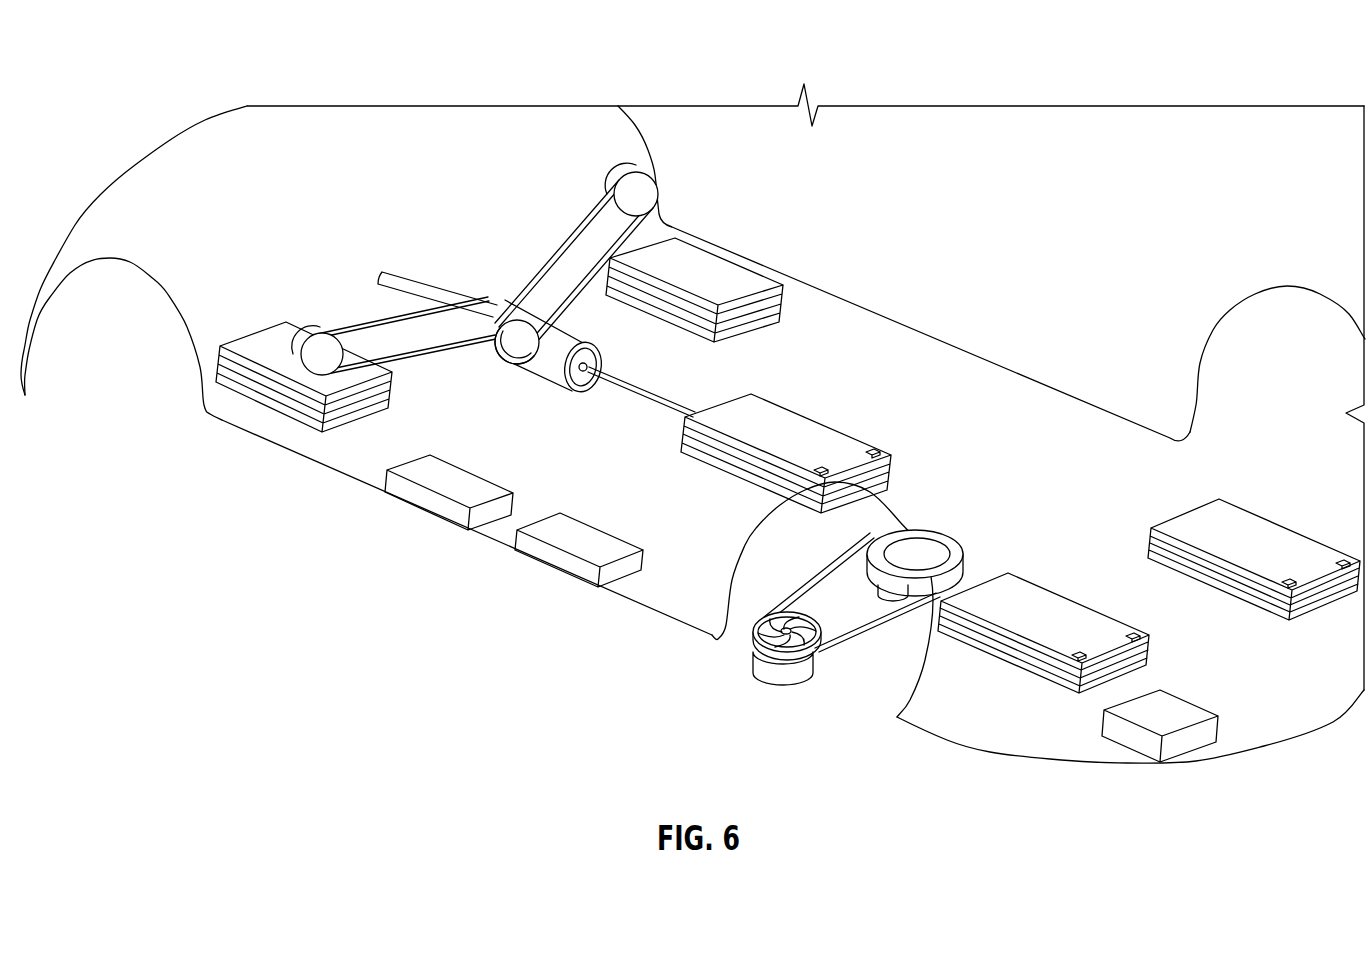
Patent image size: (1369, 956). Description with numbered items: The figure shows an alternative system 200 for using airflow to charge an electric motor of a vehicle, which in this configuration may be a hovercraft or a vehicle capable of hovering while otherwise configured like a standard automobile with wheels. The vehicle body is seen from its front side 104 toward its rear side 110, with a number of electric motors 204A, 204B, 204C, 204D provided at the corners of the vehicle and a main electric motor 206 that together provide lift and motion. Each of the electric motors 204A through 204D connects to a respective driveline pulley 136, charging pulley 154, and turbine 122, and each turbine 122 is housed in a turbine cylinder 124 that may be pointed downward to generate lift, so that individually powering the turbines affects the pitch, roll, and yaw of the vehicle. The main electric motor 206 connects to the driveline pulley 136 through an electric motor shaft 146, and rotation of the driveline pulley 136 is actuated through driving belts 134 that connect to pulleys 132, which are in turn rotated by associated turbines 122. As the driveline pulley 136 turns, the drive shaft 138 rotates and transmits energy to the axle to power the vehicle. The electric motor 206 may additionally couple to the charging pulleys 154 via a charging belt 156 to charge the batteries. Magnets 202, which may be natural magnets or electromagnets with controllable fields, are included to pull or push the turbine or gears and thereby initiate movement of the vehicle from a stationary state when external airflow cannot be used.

The front side 104 is at (1317, 717).
The rear side 110 is at (95, 198).
The turbine 122 is at (788, 613).
The turbine cylinder 124 is at (788, 677).
The pulley 132 is at (290, 356).
The driving belt 134 is at (597, 204).
The driveline pulley 136 is at (503, 297).
The drive shaft 138 is at (385, 276).
The electric motor shaft 146 is at (653, 405).
The charging pulley 154 is at (948, 548).
The charging belt 156 is at (823, 572).
The system 200 is at (735, 63).
The magnet 202 is at (428, 502).
The electric motor 204A is at (268, 338).
The electric motor 204B is at (723, 258).
The electric motor 204C is at (1039, 663).
The electric motor 204D is at (1269, 511).
The main electric motor 206 is at (803, 433).